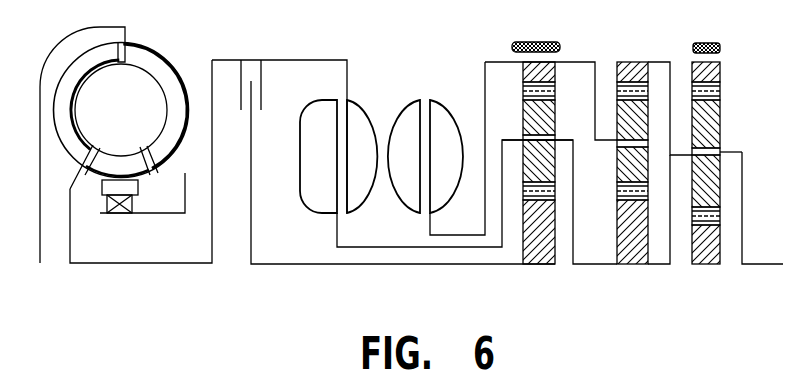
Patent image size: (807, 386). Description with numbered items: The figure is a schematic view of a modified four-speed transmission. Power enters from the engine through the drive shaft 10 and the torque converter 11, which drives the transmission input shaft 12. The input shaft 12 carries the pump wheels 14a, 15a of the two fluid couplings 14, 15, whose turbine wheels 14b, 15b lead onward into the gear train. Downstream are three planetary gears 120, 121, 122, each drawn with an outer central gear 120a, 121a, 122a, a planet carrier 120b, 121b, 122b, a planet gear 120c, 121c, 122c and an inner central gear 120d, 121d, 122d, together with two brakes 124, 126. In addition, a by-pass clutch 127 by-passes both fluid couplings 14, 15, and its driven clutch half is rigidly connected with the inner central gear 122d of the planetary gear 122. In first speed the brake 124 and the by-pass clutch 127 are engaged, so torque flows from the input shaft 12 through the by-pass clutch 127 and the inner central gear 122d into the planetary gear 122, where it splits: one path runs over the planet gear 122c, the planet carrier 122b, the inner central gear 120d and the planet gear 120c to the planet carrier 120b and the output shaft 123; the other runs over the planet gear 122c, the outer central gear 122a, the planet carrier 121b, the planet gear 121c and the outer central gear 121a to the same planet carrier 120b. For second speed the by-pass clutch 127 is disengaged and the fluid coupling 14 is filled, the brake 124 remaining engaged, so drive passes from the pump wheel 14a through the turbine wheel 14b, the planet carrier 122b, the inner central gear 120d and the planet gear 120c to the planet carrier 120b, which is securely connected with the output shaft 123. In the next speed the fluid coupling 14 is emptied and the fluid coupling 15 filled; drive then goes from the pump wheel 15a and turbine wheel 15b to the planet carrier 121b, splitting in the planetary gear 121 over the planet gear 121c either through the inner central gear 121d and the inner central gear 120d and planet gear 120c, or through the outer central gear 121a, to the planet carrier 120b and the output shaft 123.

The drive shaft 10 is at (40, 262).
The torque converter 11 is at (148, 92).
The transmission input shaft 12 is at (122, 263).
The fluid coupling 14 is at (321, 155).
The pump wheel 14a is at (362, 195).
The turbine wheel 14b is at (318, 194).
The fluid coupling 15 is at (432, 155).
The pump wheel 15a is at (408, 200).
The turbine wheel 15b is at (448, 190).
The planetary gear 120 is at (734, 180).
The outer central gear 120a is at (722, 64).
The planet carrier 120b is at (742, 153).
The planet gear 120c is at (707, 195).
The inner central gear 120d is at (707, 268).
The planetary gear 121 is at (690, 152).
The outer central gear 121a is at (640, 62).
The planet carrier 121b is at (606, 140).
The planet gear 121c is at (636, 118).
The inner central gear 121d is at (633, 242).
The planetary gear 122 is at (525, 163).
The outer central gear 122a is at (550, 72).
The planet carrier 122b is at (505, 140).
The planet gear 122c is at (543, 168).
The inner central gear 122d is at (537, 240).
The output shaft 123 is at (770, 266).
The brake 124 is at (712, 43).
The brake 126 is at (526, 42).
The by-pass clutch 127 is at (255, 91).